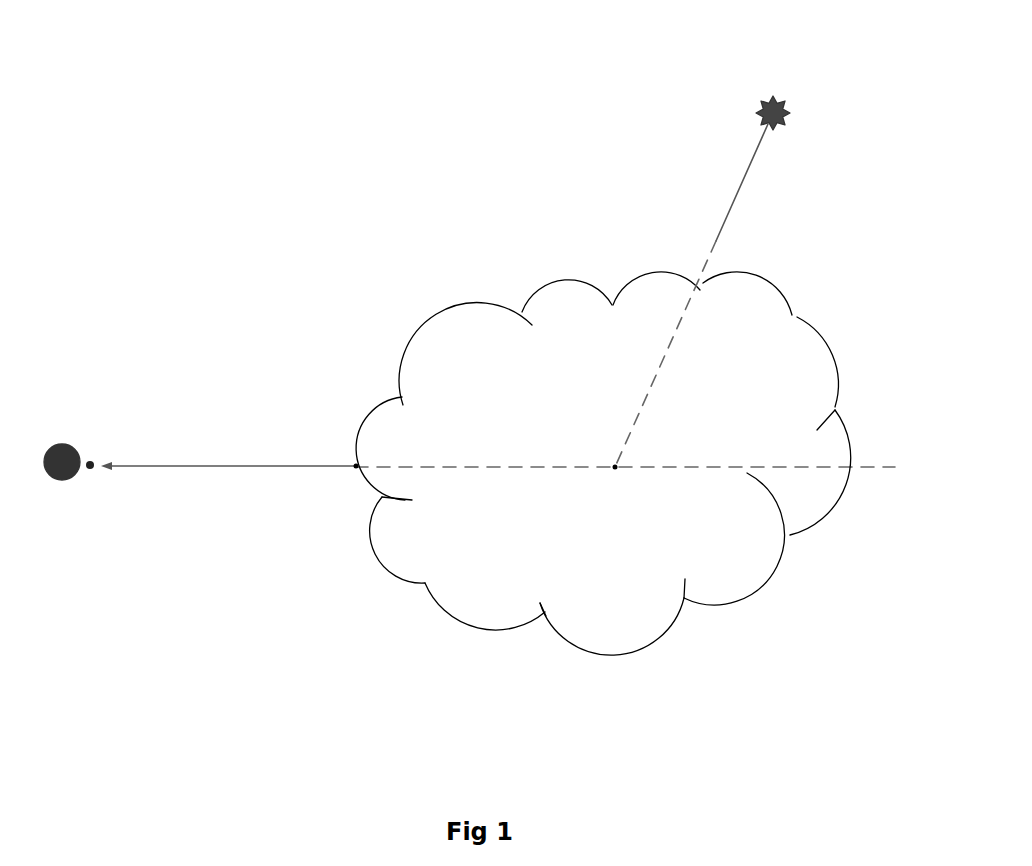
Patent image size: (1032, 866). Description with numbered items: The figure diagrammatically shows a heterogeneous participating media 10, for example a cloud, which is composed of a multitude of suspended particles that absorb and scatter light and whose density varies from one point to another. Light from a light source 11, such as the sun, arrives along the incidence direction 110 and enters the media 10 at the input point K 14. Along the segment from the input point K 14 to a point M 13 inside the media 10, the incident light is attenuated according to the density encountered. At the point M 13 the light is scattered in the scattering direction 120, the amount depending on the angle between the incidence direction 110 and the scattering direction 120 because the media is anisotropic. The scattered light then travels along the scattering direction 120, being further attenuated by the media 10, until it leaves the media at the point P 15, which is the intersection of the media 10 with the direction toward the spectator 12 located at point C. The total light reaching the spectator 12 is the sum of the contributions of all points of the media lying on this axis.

The heterogeneous participating media 10 is at (672, 623).
The light source 11 is at (750, 107).
The spectator 12 is at (73, 477).
The point M 13 is at (617, 470).
The input point K 14 is at (707, 298).
The point P 15 is at (365, 463).
The incidence direction ωin 110 is at (721, 240).
The scattering direction ωout 120 is at (220, 467).